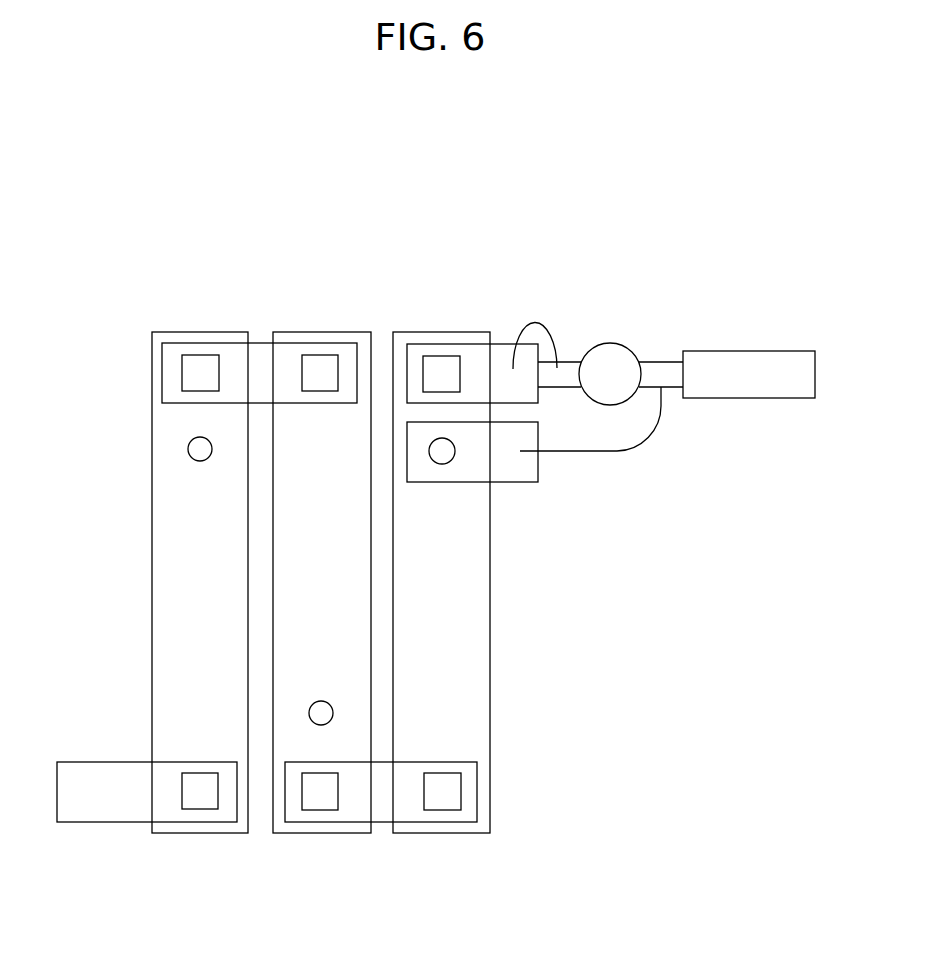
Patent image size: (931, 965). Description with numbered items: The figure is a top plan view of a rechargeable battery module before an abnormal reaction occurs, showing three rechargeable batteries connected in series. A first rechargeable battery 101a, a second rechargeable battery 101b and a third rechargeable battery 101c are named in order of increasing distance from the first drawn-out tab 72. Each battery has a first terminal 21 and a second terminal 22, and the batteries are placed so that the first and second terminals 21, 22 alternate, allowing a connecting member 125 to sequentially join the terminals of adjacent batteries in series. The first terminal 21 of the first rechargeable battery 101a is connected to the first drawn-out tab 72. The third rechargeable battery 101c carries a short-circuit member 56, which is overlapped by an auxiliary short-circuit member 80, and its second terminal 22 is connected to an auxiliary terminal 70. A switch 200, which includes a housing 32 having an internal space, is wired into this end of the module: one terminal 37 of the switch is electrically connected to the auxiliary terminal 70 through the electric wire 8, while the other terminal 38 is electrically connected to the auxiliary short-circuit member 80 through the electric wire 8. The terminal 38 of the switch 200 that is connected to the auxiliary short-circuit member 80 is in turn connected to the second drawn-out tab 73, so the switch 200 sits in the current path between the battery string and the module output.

The first rechargeable battery 101a is at (184, 296).
The second rechargeable battery 101b is at (312, 294).
The third rechargeable battery 101c is at (423, 296).
The first terminal 21 is at (321, 355).
The second terminal 22 is at (200, 355).
The connecting member 125 is at (260, 343).
The switch 200 is at (611, 323).
The auxiliary terminal 70 is at (502, 348).
The terminal 37 is at (568, 370).
The housing 32 is at (622, 352).
The terminal 38 is at (668, 368).
The second drawn-out tab 73 is at (757, 351).
The electric wire 8 is at (650, 432).
The auxiliary short-circuit member 80 is at (538, 463).
The short-circuit member 56 is at (443, 452).
The first drawn-out tab 72 is at (98, 822).